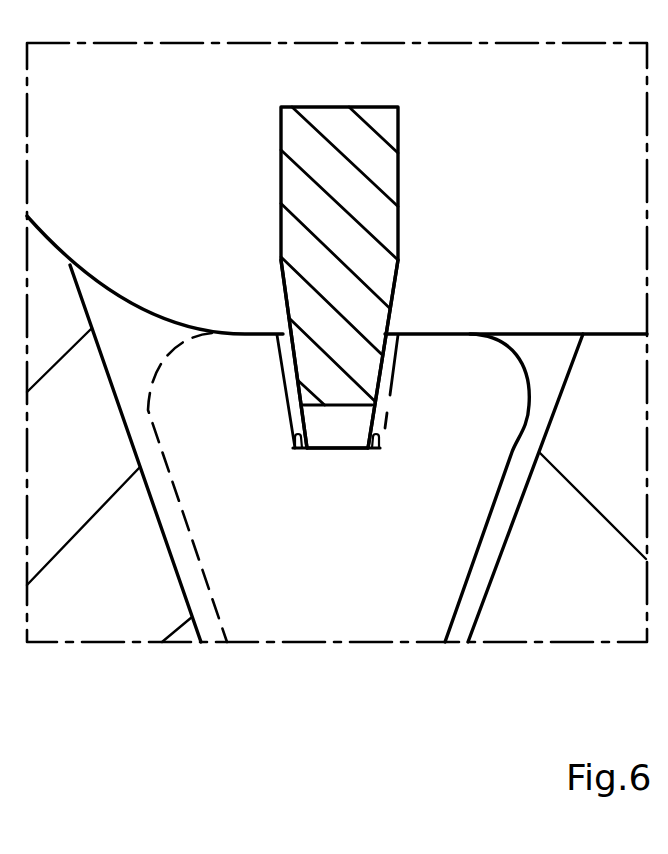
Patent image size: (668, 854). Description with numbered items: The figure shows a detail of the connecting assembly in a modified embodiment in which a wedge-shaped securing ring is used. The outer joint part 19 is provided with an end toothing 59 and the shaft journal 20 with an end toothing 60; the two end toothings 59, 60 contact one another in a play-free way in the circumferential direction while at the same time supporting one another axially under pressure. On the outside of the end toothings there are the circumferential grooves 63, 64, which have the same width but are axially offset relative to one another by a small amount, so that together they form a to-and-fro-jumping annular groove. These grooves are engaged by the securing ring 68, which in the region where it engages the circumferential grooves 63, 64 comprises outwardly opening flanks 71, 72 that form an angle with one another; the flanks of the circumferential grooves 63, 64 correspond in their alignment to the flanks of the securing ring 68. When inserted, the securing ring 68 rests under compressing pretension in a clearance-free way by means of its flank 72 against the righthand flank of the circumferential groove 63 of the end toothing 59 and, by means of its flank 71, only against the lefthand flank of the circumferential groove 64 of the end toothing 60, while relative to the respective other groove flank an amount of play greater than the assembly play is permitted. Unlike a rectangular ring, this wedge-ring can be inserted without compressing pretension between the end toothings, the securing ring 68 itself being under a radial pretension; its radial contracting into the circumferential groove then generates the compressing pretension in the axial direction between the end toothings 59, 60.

The outer joint part 19 is at (50, 275).
The shaft journal 20 is at (613, 348).
The end toothing 59 is at (122, 323).
The end toothing 60 is at (542, 342).
The circumferential groove 63 is at (302, 452).
The circumferential groove 64 is at (373, 452).
The securing ring 68 is at (337, 127).
The flank 71 is at (283, 306).
The flank 72 is at (393, 295).